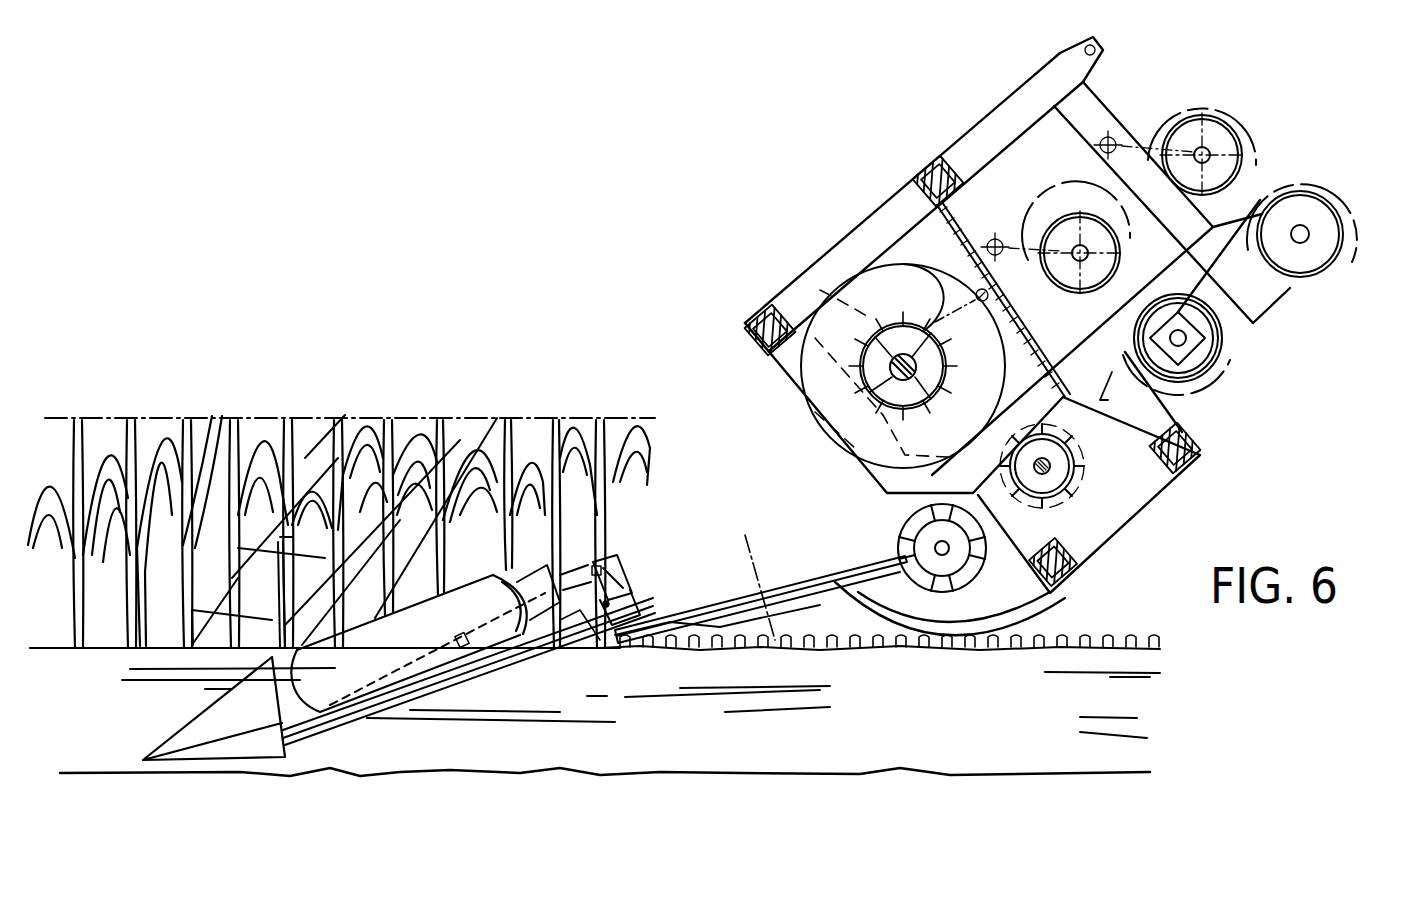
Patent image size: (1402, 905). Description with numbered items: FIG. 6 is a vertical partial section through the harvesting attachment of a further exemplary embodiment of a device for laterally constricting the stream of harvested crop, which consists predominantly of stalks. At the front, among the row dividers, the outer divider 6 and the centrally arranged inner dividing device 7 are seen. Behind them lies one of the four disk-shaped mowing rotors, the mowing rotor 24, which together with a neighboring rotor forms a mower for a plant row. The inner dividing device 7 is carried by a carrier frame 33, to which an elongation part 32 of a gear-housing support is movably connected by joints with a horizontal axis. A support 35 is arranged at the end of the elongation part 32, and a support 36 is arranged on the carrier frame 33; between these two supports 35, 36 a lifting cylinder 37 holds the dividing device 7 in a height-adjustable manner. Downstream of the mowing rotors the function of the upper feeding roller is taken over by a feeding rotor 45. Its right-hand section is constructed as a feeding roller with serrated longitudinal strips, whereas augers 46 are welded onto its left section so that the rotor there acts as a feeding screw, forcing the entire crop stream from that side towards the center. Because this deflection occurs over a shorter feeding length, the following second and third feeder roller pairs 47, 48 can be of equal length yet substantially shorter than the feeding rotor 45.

The outer divider 6 is at (300, 445).
The inner dividing device 7 is at (215, 725).
The mowing rotor 24 is at (812, 585).
The elongation part 32 is at (676, 632).
The carrier frame 33 is at (537, 633).
The support 35 is at (618, 577).
The support 36 is at (453, 645).
The lifting cylinder 37 is at (575, 608).
The feeding rotor 45 is at (997, 336).
The augers 46 is at (835, 300).
The second feeder roller pair 47 is at (1240, 378).
The third feeder roller pair 48 is at (1347, 289).